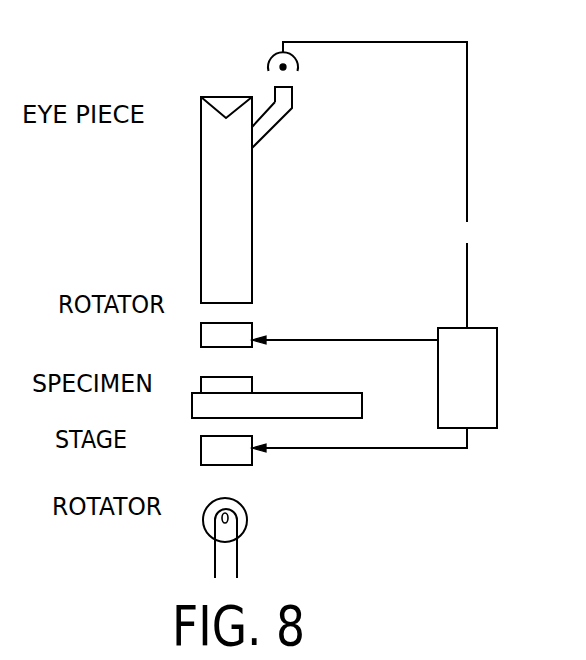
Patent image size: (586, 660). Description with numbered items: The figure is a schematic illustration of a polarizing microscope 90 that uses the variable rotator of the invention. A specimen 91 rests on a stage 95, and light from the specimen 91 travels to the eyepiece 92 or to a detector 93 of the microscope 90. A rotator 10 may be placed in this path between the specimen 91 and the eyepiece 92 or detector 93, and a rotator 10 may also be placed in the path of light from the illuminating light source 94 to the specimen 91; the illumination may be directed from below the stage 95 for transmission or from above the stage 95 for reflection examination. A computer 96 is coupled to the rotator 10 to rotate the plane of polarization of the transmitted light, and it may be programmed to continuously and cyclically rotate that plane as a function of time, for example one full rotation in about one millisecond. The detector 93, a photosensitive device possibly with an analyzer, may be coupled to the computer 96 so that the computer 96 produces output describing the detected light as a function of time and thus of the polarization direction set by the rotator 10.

The polarizing microscope 90 is at (184, 68).
The eyepiece 92 is at (252, 183).
The detector 93 is at (298, 62).
The rotator 10 is at (252, 323).
The specimen 91 is at (252, 377).
The stage 95 is at (315, 393).
The computer 96 is at (438, 383).
The illuminating light source 94 is at (247, 514).